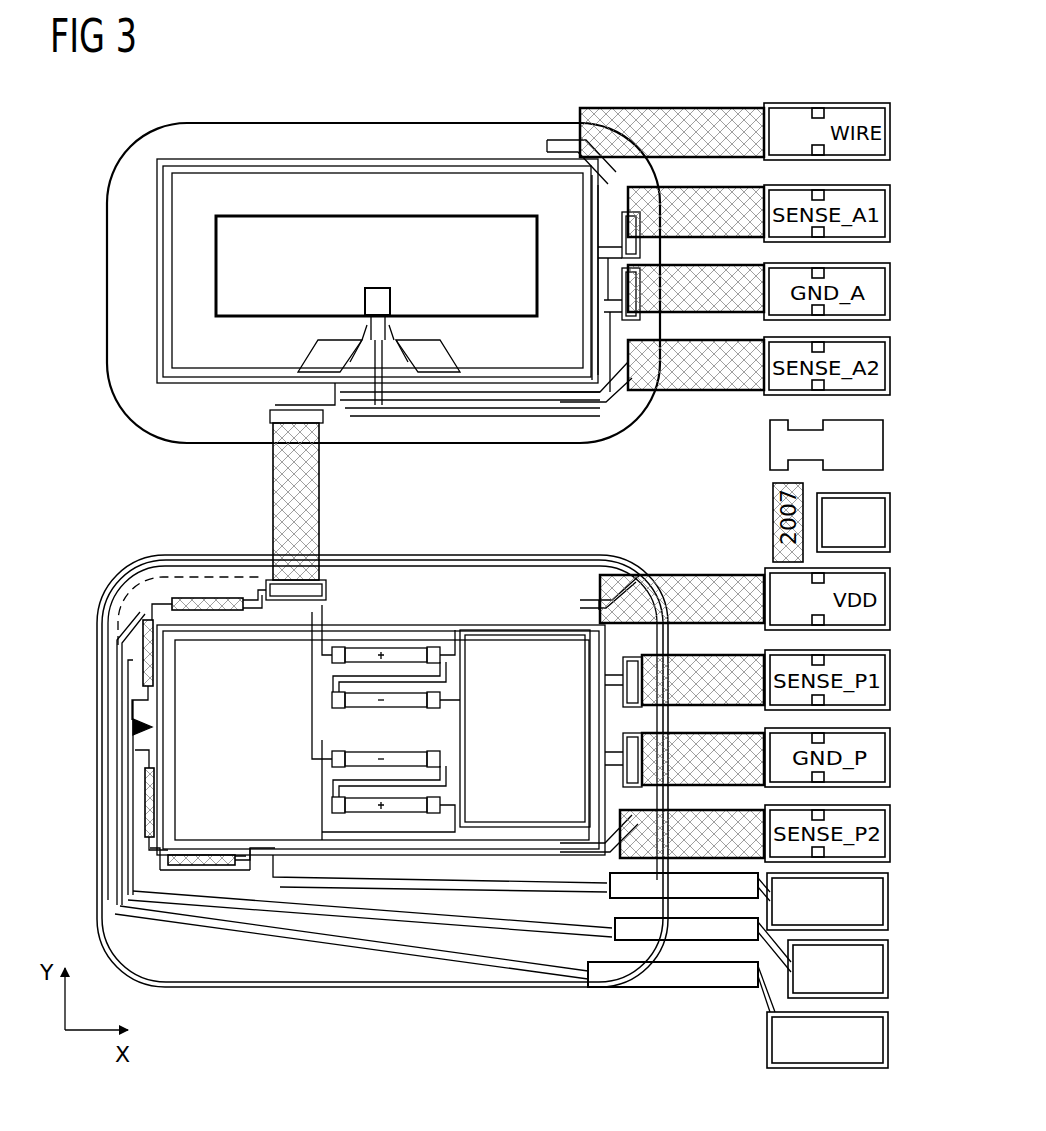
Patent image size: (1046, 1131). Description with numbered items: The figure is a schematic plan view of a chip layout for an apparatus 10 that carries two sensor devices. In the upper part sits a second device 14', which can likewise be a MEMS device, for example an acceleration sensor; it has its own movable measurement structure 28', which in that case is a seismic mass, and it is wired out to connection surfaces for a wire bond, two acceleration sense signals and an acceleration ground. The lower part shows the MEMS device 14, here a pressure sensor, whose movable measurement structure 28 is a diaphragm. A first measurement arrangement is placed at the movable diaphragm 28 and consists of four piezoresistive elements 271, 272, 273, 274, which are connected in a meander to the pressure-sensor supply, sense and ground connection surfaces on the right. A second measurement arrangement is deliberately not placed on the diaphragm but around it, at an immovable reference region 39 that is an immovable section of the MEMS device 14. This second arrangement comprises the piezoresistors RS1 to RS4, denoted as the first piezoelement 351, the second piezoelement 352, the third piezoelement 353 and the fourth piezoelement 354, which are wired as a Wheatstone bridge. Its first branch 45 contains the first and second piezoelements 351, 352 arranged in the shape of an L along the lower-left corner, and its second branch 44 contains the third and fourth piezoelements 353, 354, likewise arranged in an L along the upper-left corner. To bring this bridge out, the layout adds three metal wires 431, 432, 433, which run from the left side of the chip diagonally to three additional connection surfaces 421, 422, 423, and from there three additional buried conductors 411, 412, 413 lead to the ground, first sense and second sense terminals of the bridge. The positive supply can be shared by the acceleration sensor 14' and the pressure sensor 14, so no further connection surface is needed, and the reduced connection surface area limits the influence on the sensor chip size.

The apparatus 10 is at (95, 455).
The MEMS device 14 is at (382, 741).
The second device 14' is at (383, 253).
The movable measurement structure 28 is at (510, 666).
The movable measurement structure 28' is at (290, 310).
The piezoresistive element 271 is at (362, 645).
The piezoresistive element 272 is at (412, 695).
The piezoresistive element 273 is at (358, 757).
The piezoresistive element 274 is at (412, 802).
The first piezoelement 351 is at (148, 818).
The second piezoelement 352 is at (190, 855).
The third piezoelement 353 is at (183, 598).
The fourth piezoelement 354 is at (118, 627).
The immovable reference region 39 is at (135, 727).
The second branch 44 is at (160, 578).
The first branch 45 is at (230, 848).
The buried conductor 411 is at (890, 898).
The buried conductor 412 is at (890, 968).
The buried conductor 413 is at (890, 1038).
The connection surface 421 is at (675, 965).
The connection surface 422 is at (622, 934).
The connection surface 423 is at (620, 887).
The metal wire 431 is at (308, 880).
The metal wire 432 is at (368, 907).
The metal wire 433 is at (484, 962).